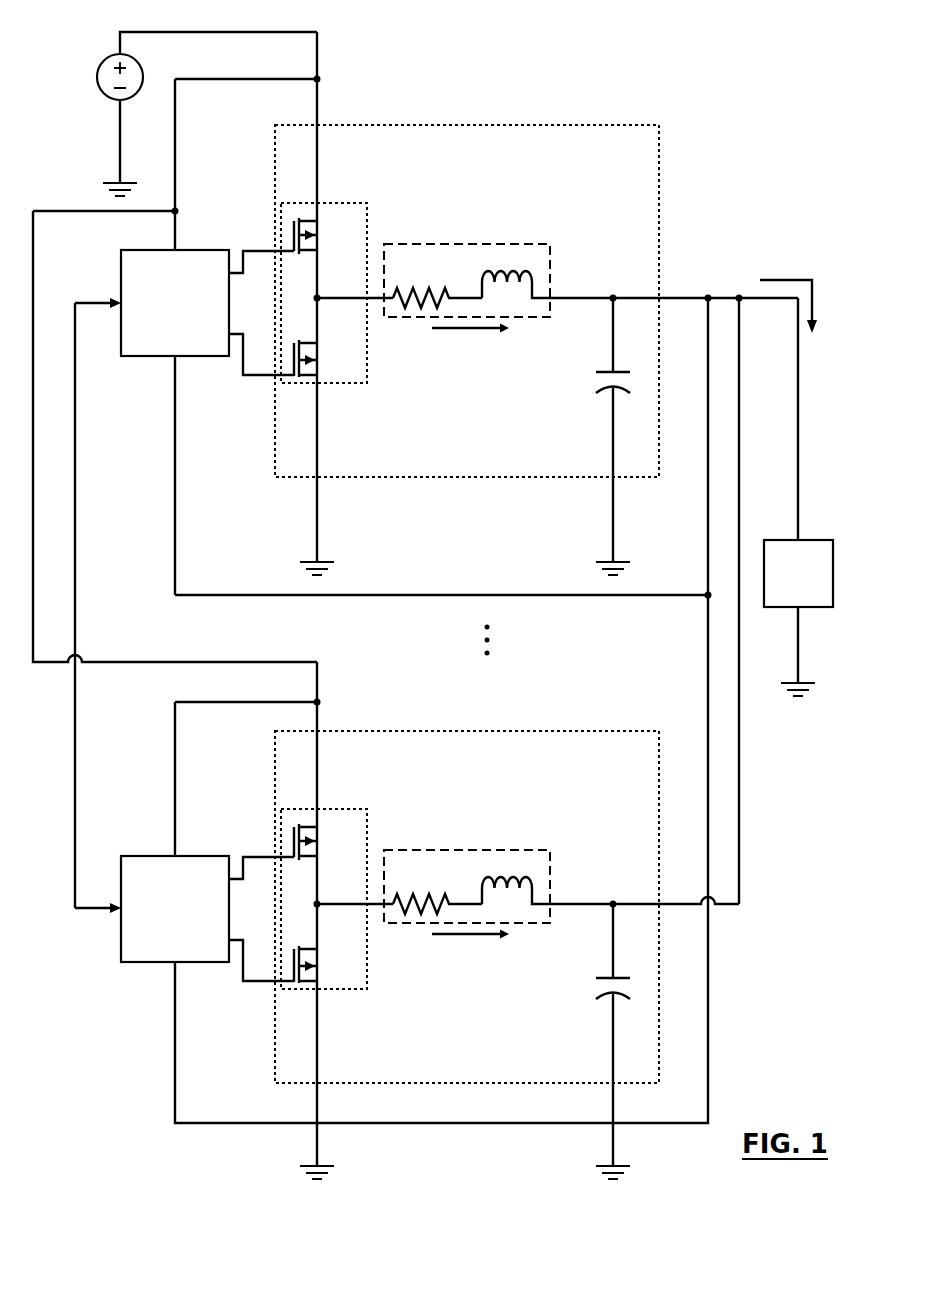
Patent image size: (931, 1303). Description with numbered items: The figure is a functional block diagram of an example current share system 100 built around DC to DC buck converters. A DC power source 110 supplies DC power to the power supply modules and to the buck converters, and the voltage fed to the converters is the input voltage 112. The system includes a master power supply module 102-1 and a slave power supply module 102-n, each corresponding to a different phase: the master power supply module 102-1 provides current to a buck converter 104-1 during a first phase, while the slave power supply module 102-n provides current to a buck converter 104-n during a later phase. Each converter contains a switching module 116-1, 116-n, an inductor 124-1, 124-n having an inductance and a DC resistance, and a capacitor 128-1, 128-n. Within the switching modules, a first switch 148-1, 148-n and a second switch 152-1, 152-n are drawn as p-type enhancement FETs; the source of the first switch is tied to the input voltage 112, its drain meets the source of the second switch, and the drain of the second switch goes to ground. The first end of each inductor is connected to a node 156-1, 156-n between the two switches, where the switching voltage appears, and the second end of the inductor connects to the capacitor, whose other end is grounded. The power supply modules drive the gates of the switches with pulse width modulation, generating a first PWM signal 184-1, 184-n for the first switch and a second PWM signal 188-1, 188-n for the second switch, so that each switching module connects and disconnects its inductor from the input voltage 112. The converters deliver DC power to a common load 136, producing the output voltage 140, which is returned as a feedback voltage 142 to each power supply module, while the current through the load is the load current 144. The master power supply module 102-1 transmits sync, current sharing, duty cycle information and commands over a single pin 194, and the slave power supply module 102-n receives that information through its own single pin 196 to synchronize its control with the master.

The current share system 100 is at (762, 63).
The DC power source 110 is at (106, 52).
The input voltage 112 is at (317, 79).
The buck converter 104-1 is at (533, 125).
The buck converter 104-n is at (467, 884).
The first switch 148-1 is at (334, 220).
The first switch 148-n is at (350, 823).
The second switch 152-1 is at (334, 367).
The second switch 152-n is at (348, 982).
The node 156-1 is at (317, 298).
The node 156-n is at (376, 933).
The switching module 116-1 is at (384, 244).
The switching module 116-n is at (466, 866).
The inductor 124-1 is at (533, 244).
The inductor 124-n is at (585, 873).
The capacitor 128-1 is at (598, 387).
The capacitor 128-n is at (585, 1034).
The first PWM signal 184-1 is at (243, 251).
The first PWM signal 184-n is at (241, 841).
The second PWM signal 188-1 is at (253, 375).
The second PWM signal 188-n is at (240, 978).
The master power supply module 102-1 is at (158, 356).
The slave power supply module 102-n is at (137, 925).
The single pin 194 is at (117, 303).
The single pin 196 is at (80, 925).
The output voltage 140 is at (737, 292).
The feedback voltage 142 is at (708, 508).
The load current 144 is at (812, 280).
The load 136 is at (824, 540).